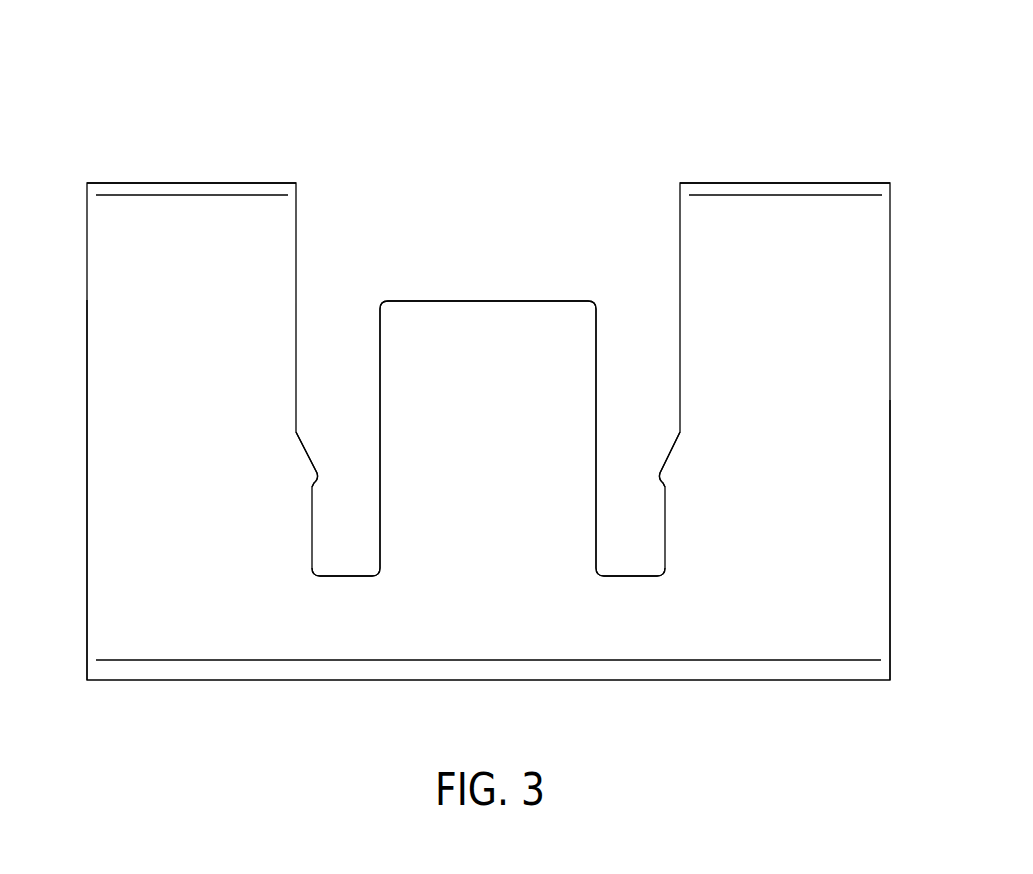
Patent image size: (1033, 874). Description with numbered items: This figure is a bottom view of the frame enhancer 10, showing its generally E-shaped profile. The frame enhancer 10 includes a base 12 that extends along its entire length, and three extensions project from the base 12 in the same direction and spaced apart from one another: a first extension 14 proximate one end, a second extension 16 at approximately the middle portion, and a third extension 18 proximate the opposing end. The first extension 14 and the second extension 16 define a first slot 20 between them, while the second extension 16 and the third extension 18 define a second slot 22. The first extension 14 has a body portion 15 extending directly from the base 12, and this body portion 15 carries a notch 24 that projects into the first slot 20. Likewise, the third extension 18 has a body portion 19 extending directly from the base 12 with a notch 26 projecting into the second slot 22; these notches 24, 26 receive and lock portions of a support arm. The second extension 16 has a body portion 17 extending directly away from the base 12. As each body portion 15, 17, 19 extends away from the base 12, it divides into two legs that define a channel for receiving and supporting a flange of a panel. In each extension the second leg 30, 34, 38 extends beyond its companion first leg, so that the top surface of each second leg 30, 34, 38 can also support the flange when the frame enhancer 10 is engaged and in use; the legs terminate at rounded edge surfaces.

The frame enhancer 10 is at (127, 100).
The base 12 is at (213, 638).
The first extension 14 is at (102, 537).
The body portion 15 is at (102, 590).
The second extension 16 is at (439, 535).
The body portion 17 is at (527, 560).
The third extension 18 is at (872, 508).
The body portion 19 is at (872, 562).
The first slot 20 is at (340, 565).
The second slot 22 is at (632, 563).
The notch 24 is at (308, 483).
The notch 26 is at (668, 476).
The second leg 30 is at (102, 322).
The second leg 34 is at (422, 323).
The second leg 38 is at (870, 245).